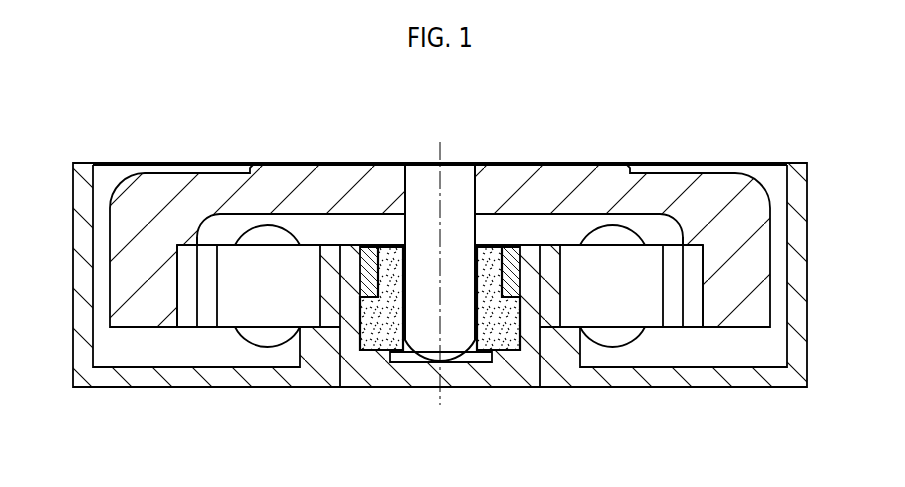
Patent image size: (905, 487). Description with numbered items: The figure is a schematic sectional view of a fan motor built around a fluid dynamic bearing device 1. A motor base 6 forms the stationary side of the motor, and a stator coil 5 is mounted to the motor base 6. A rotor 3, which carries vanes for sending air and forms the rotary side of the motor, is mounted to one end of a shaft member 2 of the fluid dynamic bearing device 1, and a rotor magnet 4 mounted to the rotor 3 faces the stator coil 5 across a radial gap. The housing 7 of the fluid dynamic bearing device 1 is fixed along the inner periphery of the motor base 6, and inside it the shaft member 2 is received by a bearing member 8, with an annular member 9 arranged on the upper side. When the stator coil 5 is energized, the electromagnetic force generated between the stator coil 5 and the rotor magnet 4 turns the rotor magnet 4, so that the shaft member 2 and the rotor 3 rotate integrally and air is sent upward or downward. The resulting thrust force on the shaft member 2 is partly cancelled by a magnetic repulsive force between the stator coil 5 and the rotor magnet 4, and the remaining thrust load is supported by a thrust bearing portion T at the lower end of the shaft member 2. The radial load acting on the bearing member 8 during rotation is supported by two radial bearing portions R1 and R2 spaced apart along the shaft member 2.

The fluid dynamic bearing device 1 is at (440, 278).
The shaft member 2 is at (460, 161).
The rotor 3 is at (687, 190).
The rotor magnet 4 is at (697, 310).
The stator coil 5 is at (653, 315).
The motor base 6 is at (570, 372).
The housing 7 is at (432, 383).
The bearing member 8 is at (505, 330).
The annular member 9 is at (367, 253).
The radial bearing portion R1 is at (407, 279).
The radial bearing portion R2 is at (407, 320).
The thrust bearing portion T is at (443, 363).